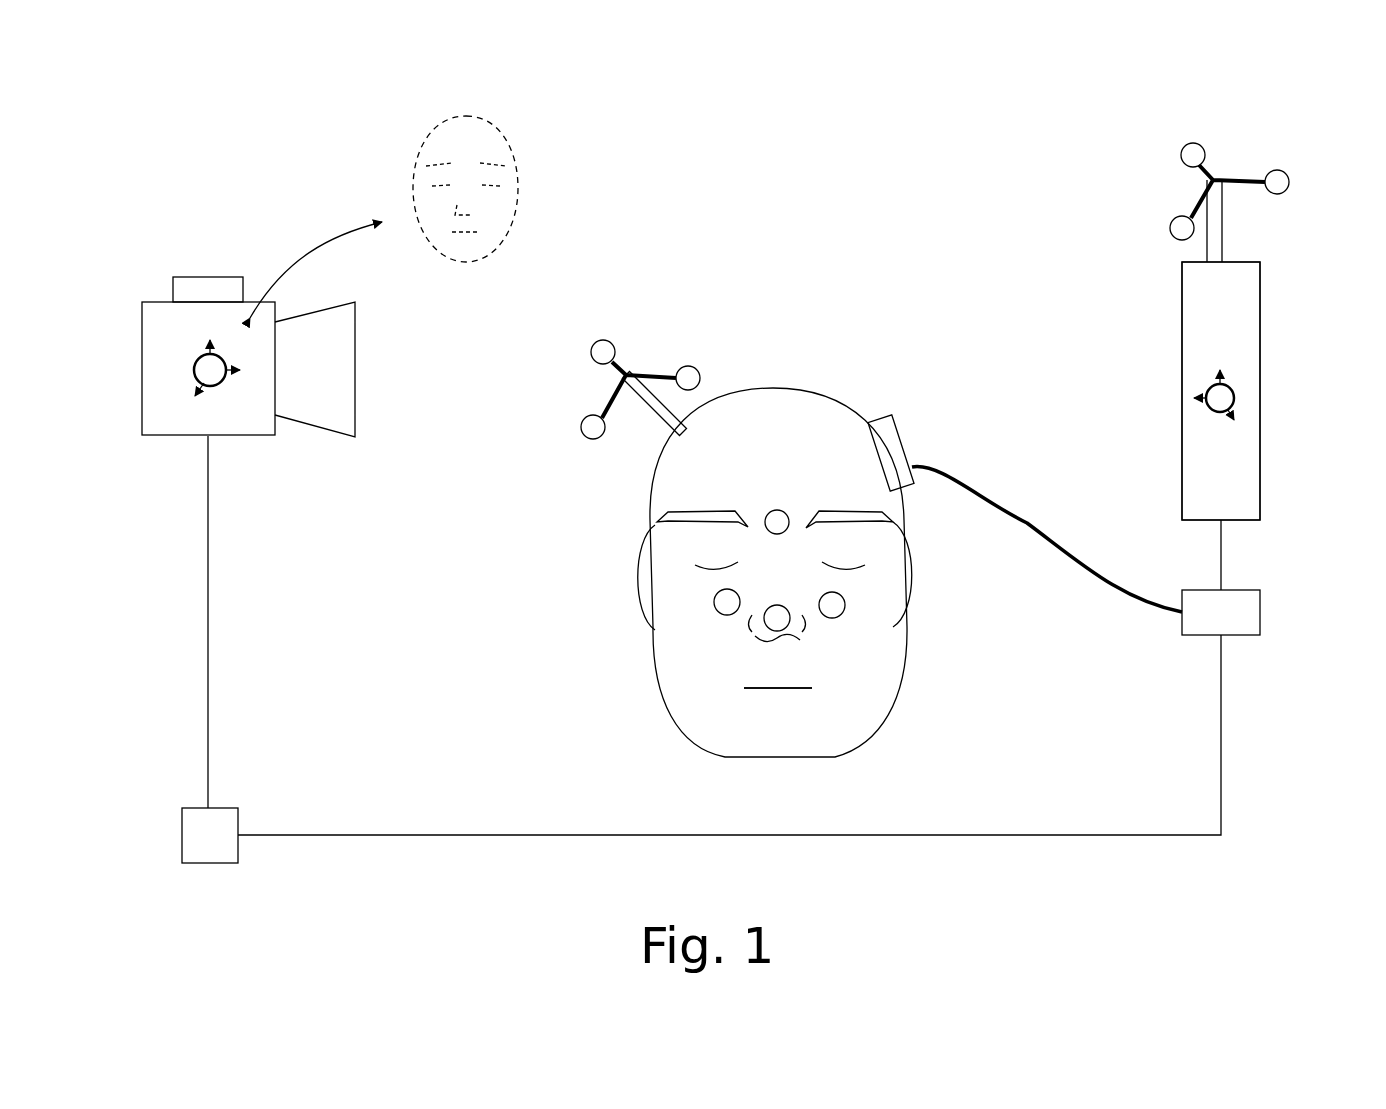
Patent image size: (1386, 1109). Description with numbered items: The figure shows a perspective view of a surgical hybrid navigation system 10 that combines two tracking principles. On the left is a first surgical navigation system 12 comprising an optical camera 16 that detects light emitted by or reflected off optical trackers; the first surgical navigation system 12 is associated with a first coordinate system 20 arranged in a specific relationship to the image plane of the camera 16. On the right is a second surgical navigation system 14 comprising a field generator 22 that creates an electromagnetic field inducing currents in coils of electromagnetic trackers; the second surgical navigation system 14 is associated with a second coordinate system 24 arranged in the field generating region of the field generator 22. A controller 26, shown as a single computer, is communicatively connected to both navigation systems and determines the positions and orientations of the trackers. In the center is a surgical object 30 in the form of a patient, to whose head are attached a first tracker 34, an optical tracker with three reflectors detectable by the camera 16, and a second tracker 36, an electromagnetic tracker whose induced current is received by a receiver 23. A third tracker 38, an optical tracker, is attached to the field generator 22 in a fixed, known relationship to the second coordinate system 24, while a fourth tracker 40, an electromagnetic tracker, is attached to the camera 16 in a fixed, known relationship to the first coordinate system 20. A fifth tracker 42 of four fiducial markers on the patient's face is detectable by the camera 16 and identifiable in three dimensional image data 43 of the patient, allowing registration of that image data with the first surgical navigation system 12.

The surgical hybrid navigation system 10 is at (228, 139).
The first surgical navigation system 12 is at (150, 285).
The second surgical navigation system 14 is at (1308, 244).
The optical camera 16 is at (147, 438).
The first coordinate system 20 is at (193, 372).
The field generator 22 is at (1247, 483).
The receiver 23 is at (1247, 612).
The second coordinate system 24 is at (1247, 410).
The controller 26 is at (192, 808).
The surgical object 30 is at (665, 668).
The first tracker 34 is at (626, 375).
The second tracker 36 is at (884, 417).
The third tracker 38 is at (1211, 179).
The fourth tracker 40 is at (230, 287).
The fifth tracker 42 is at (777, 510).
The three dimensional image data 43 is at (508, 138).